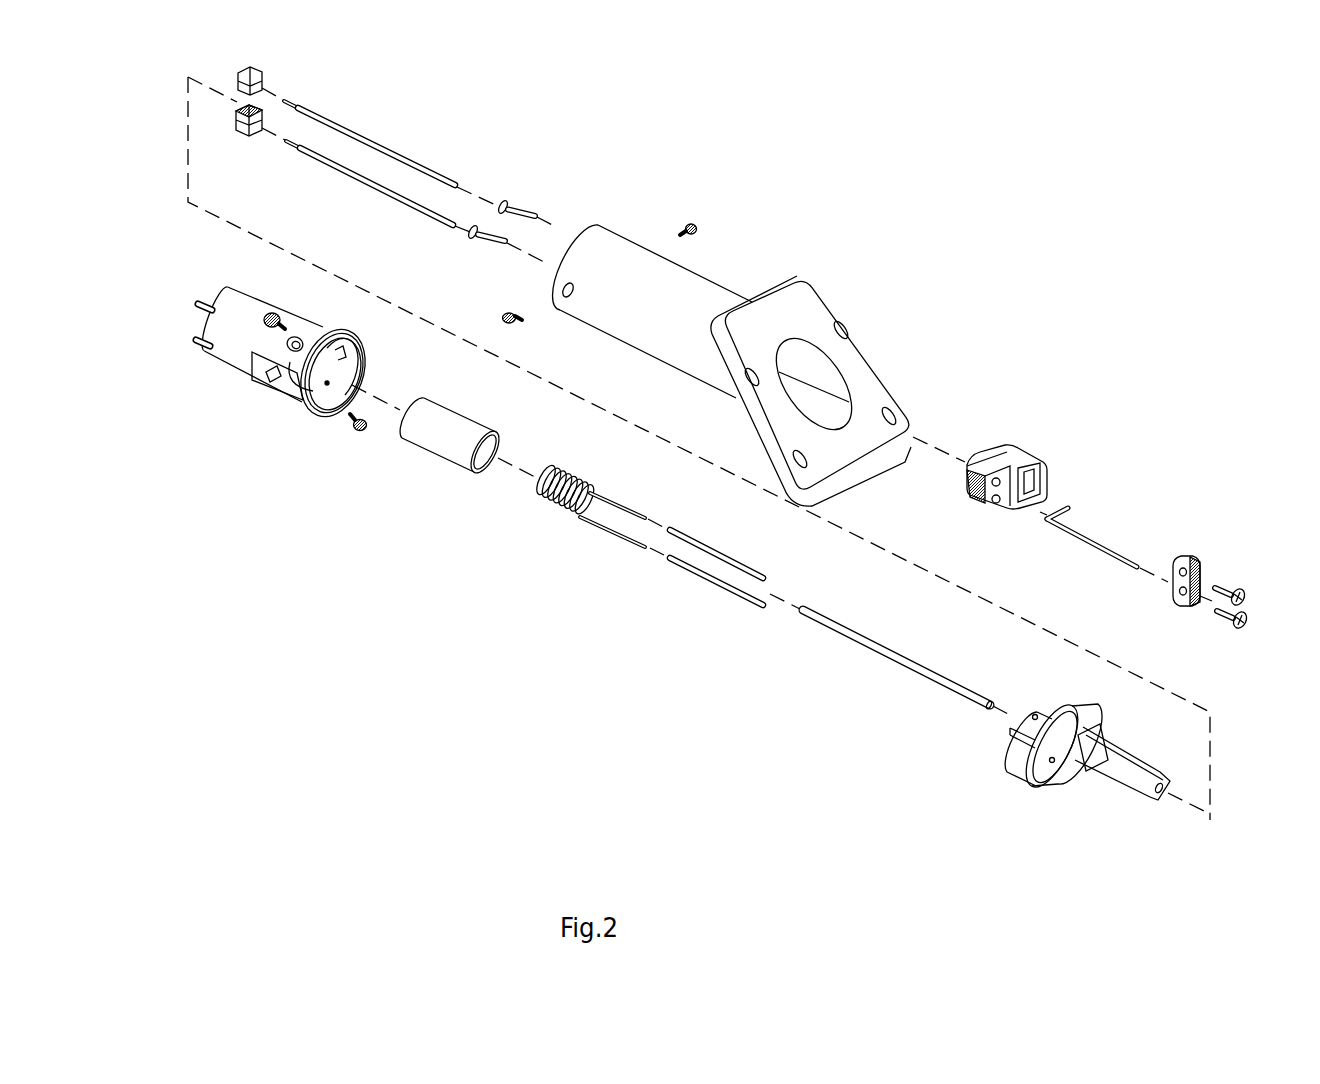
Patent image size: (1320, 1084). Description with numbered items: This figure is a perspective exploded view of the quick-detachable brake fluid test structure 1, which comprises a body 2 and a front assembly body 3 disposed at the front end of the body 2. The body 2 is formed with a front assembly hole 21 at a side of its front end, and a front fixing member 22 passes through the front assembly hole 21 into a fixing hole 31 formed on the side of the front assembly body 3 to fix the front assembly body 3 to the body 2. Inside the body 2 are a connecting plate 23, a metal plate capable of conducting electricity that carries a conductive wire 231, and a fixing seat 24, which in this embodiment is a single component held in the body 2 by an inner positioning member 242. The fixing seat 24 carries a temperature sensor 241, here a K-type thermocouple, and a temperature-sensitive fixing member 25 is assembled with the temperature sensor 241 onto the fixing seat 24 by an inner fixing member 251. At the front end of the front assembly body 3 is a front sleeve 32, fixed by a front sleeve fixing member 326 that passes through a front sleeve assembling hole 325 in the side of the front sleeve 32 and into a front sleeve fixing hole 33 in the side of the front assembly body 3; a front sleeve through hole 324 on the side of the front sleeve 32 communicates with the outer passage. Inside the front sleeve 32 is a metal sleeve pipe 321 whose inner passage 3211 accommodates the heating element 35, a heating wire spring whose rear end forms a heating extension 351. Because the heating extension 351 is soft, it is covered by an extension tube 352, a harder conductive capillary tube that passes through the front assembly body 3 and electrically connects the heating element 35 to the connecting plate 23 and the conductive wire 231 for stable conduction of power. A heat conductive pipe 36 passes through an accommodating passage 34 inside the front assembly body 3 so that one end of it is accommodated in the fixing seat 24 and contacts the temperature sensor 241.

The quick-detachable brake fluid test structure 1 is at (1112, 218).
The body 2 is at (708, 292).
The front assembly hole 21 is at (570, 288).
The front fixing member 22 is at (515, 316).
The connecting plate 23 is at (240, 69).
The conductive wire 231 is at (383, 146).
The fixing seat 24 is at (1010, 447).
The temperature sensor 241 is at (1095, 547).
The inner positioning member 242 is at (503, 205).
The temperature-sensitive fixing member 25 is at (1190, 557).
The inner fixing member 251 is at (1223, 587).
The front assembly body 3 is at (1022, 748).
The fixing hole 31 is at (1051, 762).
The front sleeve 32 is at (235, 328).
The sleeve pipe 321 is at (440, 433).
The inner passage 3211 is at (480, 452).
The front sleeve through hole 324 is at (272, 381).
The front sleeve assembling hole 325 is at (285, 372).
The front sleeve fixing member 326 is at (270, 326).
The front sleeve fixing hole 33 is at (1032, 717).
The accommodating passage 34 is at (1165, 785).
The heating element 35 is at (543, 493).
The heating extension 351 is at (617, 532).
The extension tube 352 is at (710, 578).
The heat conductive pipe 36 is at (870, 640).